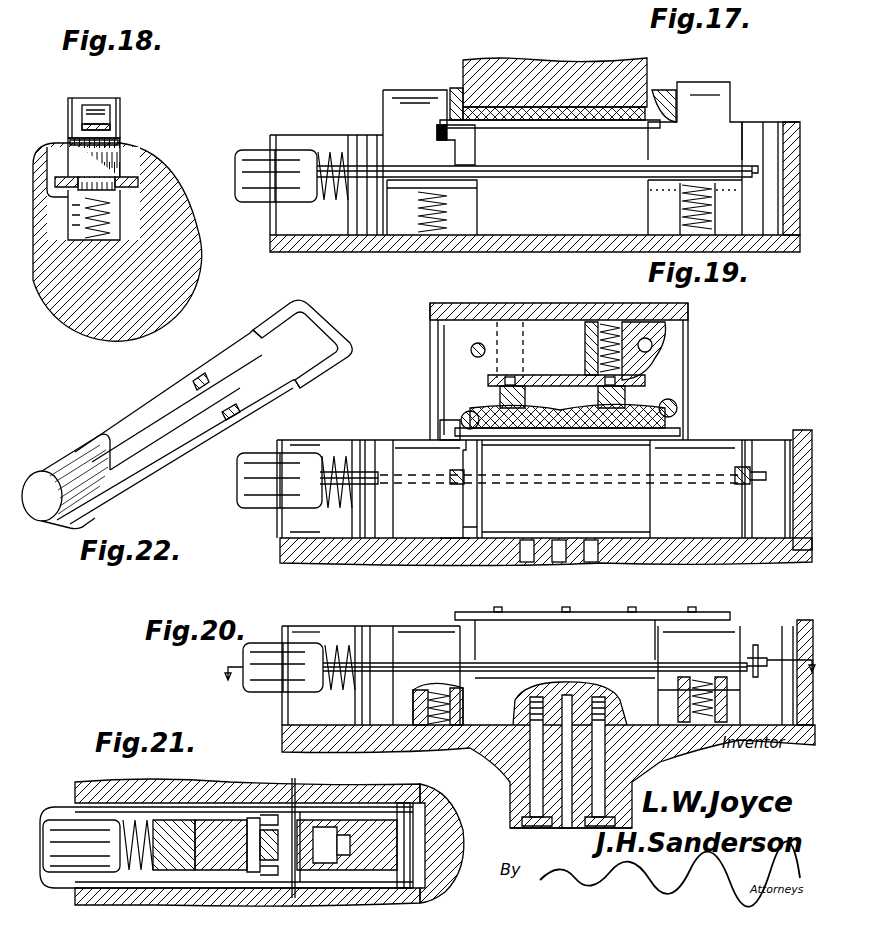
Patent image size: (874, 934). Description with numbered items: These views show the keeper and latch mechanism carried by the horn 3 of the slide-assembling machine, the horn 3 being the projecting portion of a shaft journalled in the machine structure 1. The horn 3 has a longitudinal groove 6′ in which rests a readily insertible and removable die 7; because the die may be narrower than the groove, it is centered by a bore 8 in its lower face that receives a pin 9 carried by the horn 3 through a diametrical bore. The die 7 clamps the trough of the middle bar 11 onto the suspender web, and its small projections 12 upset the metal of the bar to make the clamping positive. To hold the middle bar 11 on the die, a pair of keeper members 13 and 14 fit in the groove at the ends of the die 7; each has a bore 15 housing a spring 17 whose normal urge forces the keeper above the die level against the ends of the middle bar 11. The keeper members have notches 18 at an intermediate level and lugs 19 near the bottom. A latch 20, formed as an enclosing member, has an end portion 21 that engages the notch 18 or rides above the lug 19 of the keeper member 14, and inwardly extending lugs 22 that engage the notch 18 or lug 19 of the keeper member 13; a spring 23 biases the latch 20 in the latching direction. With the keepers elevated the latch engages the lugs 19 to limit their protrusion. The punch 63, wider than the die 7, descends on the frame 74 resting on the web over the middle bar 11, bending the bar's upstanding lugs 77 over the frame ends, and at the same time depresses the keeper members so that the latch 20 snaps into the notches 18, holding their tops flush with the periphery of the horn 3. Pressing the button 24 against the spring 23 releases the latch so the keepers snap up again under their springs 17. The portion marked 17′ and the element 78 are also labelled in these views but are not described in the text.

In FIG. 19, the cover casing 1 is at (535, 303).
In FIG. 17, the horn 3 is at (535, 193).
In FIG. 18, the horn 3 is at (125, 147).
In FIG. 19, the horn 3 is at (330, 440).
In FIG. 20, the horn 3 is at (282, 730).
In FIG. 18, the longitudinal groove 6′ is at (110, 245).
In FIG. 19, the longitudinal groove 6′ is at (298, 444).
In FIG. 20, the longitudinal groove 6′ is at (322, 632).
In FIG. 17, the die 7 is at (552, 58).
In FIG. 19, the die 7 is at (566, 488).
In FIG. 20, the die 7 is at (604, 626).
In FIG. 21, the die 7 is at (290, 805).
In FIG. 20, the bore 8 is at (568, 761).
In FIG. 20, the pin 9 is at (570, 828).
In FIG. 17, the middle bar 11 is at (606, 64).
In FIG. 19, the middle bar 11 is at (567, 409).
In FIG. 20, the small projections 12 is at (560, 607).
In FIG. 17, the keeper member 13 is at (385, 92).
In FIG. 18, the keeper member 13 is at (116, 98).
In FIG. 19, the keeper member 13 is at (400, 440).
In FIG. 20, the keeper member 13 is at (428, 626).
In FIG. 21, the keeper member 13 is at (212, 820).
In FIG. 17, the keeper member 14 is at (708, 86).
In FIG. 19, the keeper member 14 is at (720, 440).
In FIG. 20, the keeper member 14 is at (716, 626).
In FIG. 20, the bore 15 is at (418, 726).
In FIG. 17, the spring 17 is at (418, 212).
In FIG. 20, the spring 17 is at (446, 726).
In FIG. 19, the end wall 17′ is at (785, 440).
In FIG. 20, the end wall 17′ is at (776, 626).
In FIG. 21, the end wall 17′ is at (436, 815).
In FIG. 17, the notch 18 is at (437, 128).
In FIG. 19, the notch 18 is at (445, 480).
In FIG. 17, the lug 19 is at (432, 207).
In FIG. 18, the lug 19 is at (46, 138).
In FIG. 19, the lug 19 is at (460, 538).
In FIG. 17, the latch 20 is at (536, 178).
In FIG. 18, the latch 20 is at (128, 180).
In FIG. 22, the latch 20 is at (170, 382).
In FIG. 22, the end portion 21 is at (325, 318).
In FIG. 19, the end portion 21 is at (748, 464).
In FIG. 20, the end portion 21 is at (513, 686).
In FIG. 21, the end portion 21 is at (400, 812).
In FIG. 22, the inwardly extending lugs 22 is at (222, 415).
In FIG. 19, the inwardly extending lugs 22 is at (466, 476).
In FIG. 21, the inwardly extending lugs 22 is at (250, 818).
In FIG. 17, the spring 23 is at (324, 150).
In FIG. 19, the spring 23 is at (338, 508).
In FIG. 20, the spring 23 is at (348, 645).
In FIG. 21, the spring 23 is at (140, 820).
In FIG. 17, the button 24 is at (250, 150).
In FIG. 22, the button 24 is at (62, 455).
In FIG. 19, the button 24 is at (246, 486).
In FIG. 20, the button 24 is at (272, 643).
In FIG. 21, the button 24 is at (58, 820).
In FIG. 19, the punch 63 is at (432, 352).
In FIG. 19, the frame 74 is at (440, 424).
In FIG. 17, the upstanding lugs 77 is at (456, 90).
In FIG. 18, the upstanding lugs 77 is at (92, 105).
In FIG. 19, the upstanding lugs 77 is at (460, 420).
In FIG. 19, the bracket 78 is at (532, 386).